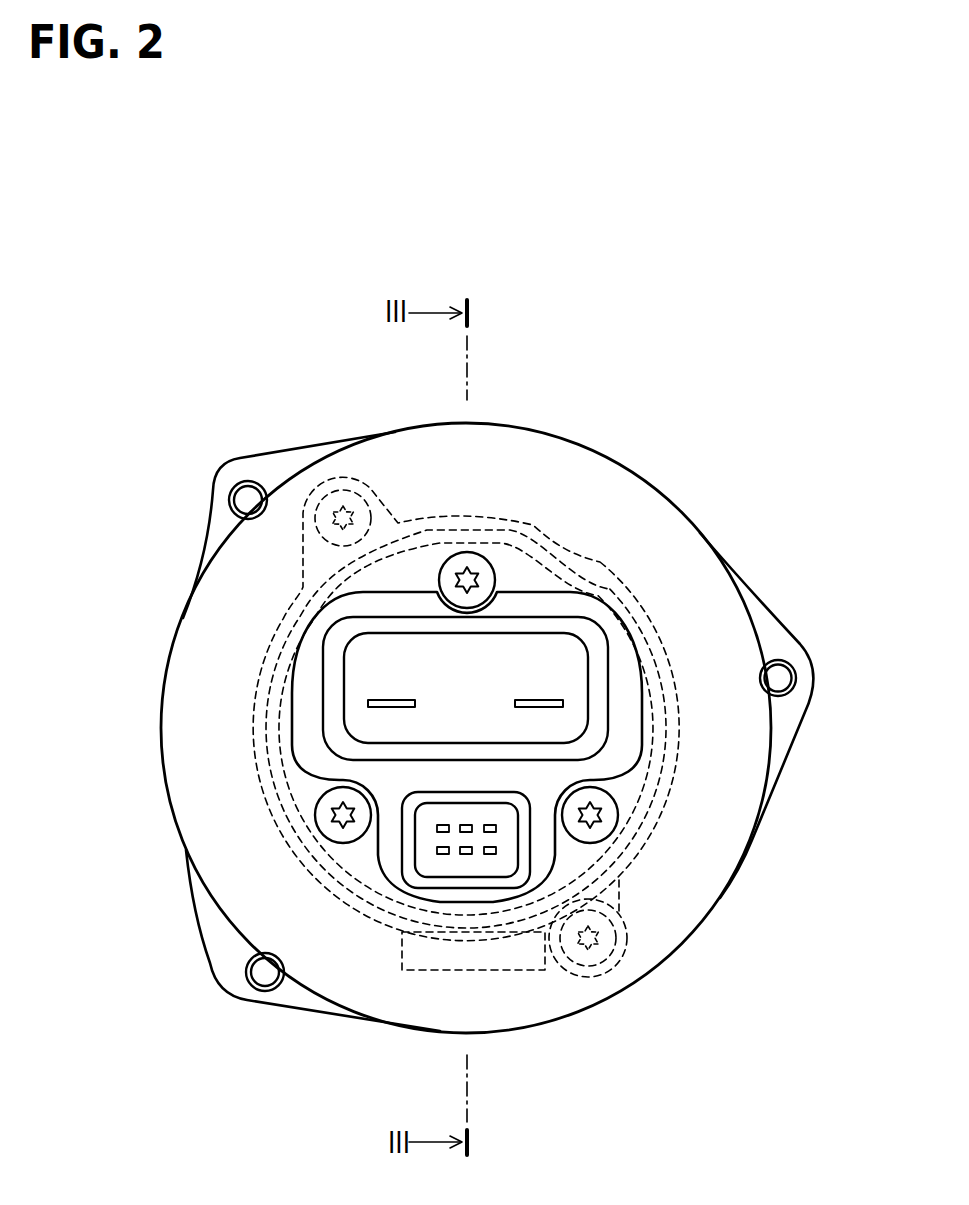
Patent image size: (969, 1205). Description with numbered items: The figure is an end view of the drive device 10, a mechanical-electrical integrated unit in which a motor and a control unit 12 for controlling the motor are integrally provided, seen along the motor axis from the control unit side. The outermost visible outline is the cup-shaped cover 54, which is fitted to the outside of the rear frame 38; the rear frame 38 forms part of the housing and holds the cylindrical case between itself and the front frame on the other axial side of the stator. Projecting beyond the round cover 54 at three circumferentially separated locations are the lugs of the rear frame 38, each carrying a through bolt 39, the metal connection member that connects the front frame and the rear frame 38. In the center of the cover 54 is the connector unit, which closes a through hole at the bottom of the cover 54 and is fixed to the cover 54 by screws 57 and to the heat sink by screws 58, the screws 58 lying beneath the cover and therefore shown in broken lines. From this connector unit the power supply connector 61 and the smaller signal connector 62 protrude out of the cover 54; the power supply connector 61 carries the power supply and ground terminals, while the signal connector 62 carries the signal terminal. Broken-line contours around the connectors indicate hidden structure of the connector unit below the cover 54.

The drive device 10 is at (258, 398).
The control unit 12 is at (286, 478).
The rear frame 38 is at (212, 524).
The through bolt 39 is at (247, 500).
The cover 54 is at (650, 505).
The screw 57 is at (467, 578).
The screw 58 is at (343, 516).
The power supply connector 61 is at (337, 663).
The signal connector 62 is at (413, 865).